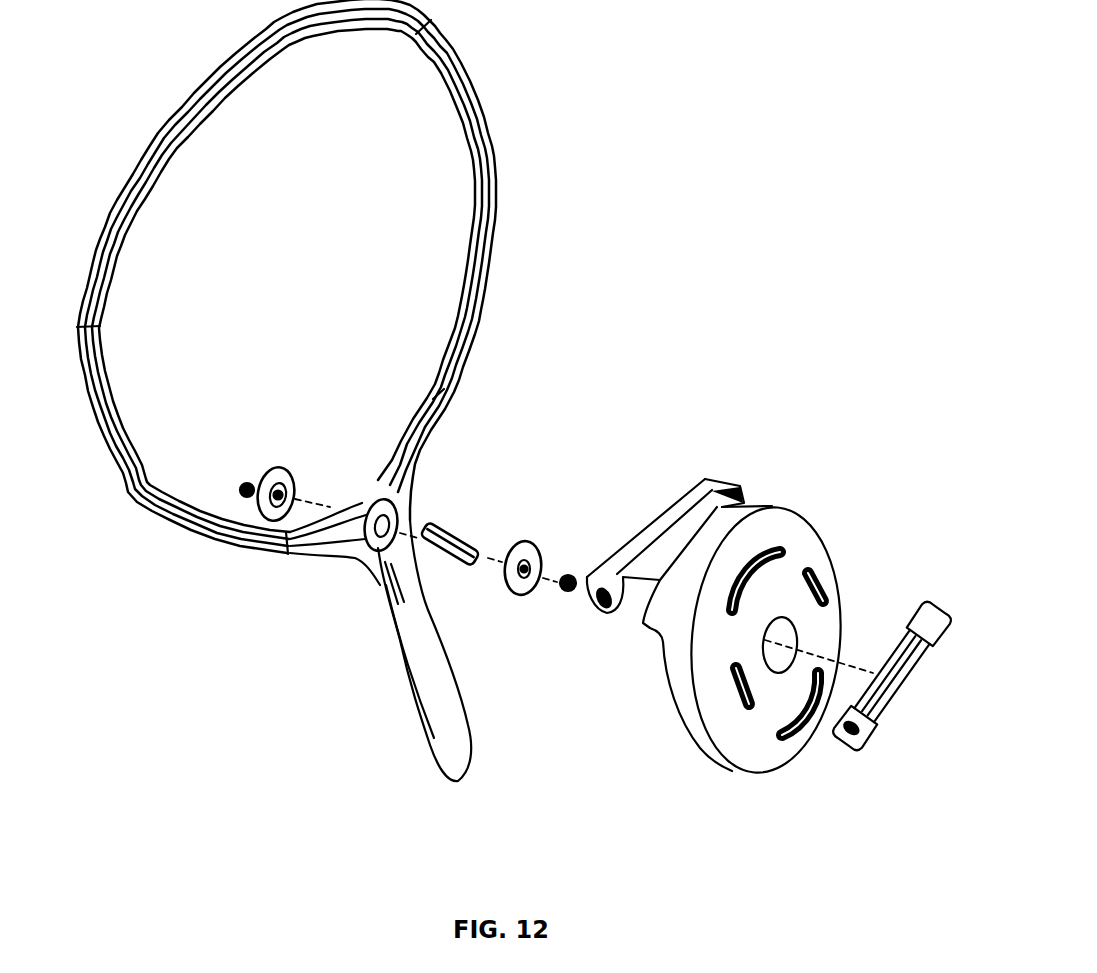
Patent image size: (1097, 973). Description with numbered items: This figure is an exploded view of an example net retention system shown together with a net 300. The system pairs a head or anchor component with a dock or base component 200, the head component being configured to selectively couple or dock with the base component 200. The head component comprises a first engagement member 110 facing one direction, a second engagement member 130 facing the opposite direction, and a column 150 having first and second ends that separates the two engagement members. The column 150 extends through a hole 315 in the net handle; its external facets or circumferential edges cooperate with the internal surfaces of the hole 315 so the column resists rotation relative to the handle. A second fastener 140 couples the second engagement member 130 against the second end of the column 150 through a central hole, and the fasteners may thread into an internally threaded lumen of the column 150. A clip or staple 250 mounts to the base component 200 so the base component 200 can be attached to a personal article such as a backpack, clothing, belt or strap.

The hoop frame with handle 300 is at (535, 181).
The hole 315 is at (380, 538).
The second engagement member 130 is at (263, 521).
The second fastener 140 is at (232, 483).
The column 150 is at (453, 513).
The first engagement member 110 is at (533, 519).
The base component 200 is at (741, 422).
The clip 250 is at (922, 577).